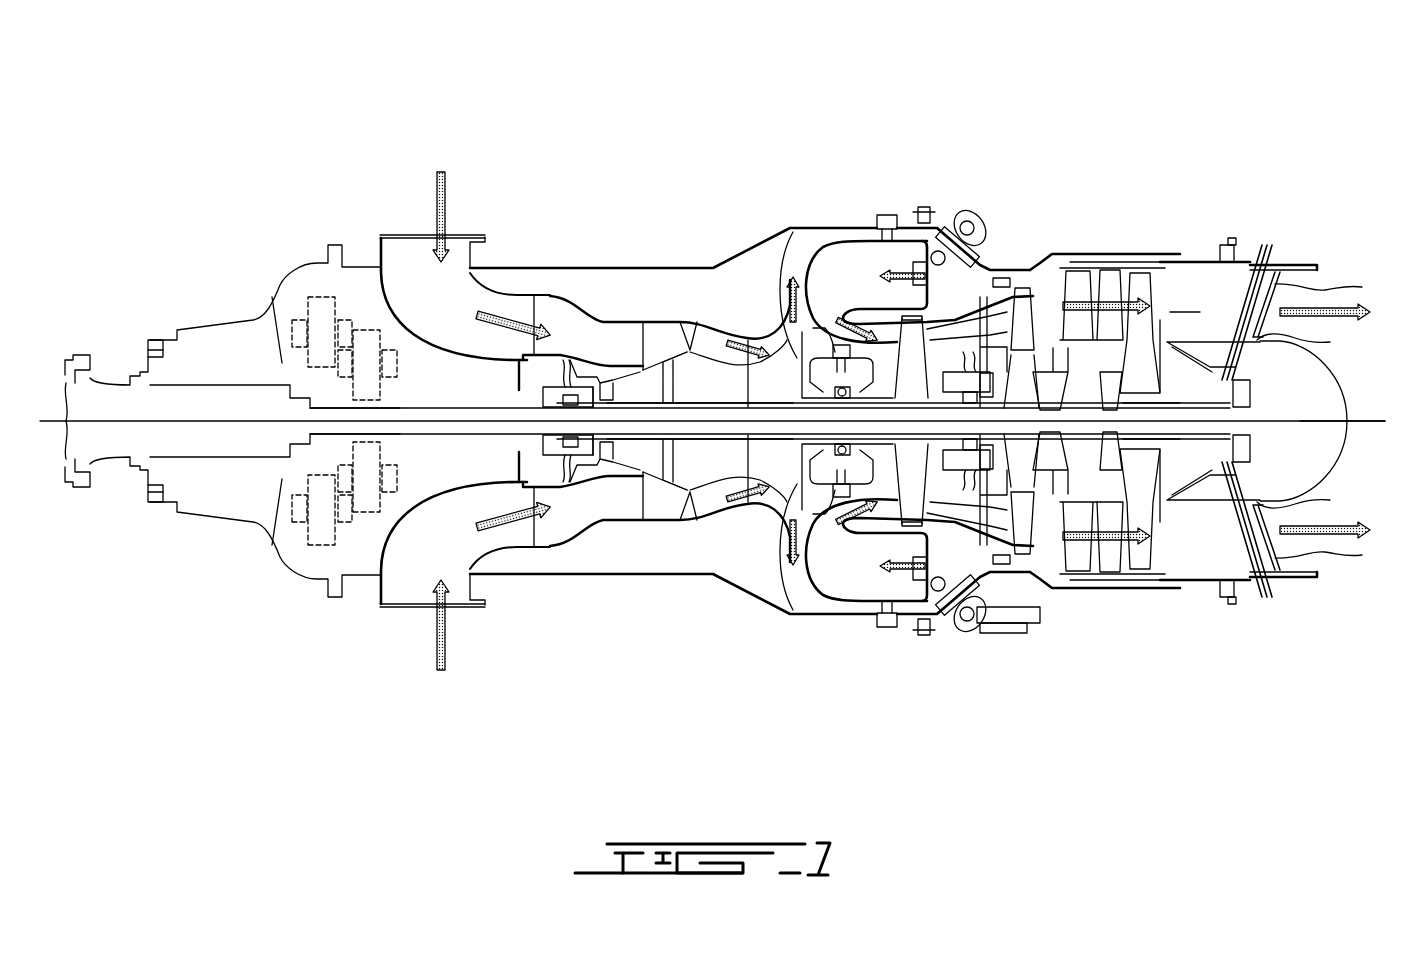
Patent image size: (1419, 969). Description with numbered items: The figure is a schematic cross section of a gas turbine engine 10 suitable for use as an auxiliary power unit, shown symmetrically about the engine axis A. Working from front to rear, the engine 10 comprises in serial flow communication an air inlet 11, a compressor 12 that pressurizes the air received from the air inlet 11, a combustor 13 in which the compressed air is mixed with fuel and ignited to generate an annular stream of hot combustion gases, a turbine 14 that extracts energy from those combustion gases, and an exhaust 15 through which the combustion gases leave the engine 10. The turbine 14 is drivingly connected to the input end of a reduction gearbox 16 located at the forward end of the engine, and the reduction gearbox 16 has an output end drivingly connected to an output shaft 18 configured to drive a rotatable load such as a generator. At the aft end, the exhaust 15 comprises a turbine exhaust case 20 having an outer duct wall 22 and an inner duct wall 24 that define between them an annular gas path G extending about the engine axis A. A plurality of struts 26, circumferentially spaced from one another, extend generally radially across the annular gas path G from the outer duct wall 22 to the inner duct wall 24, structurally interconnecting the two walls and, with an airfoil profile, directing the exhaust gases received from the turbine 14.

The gas turbine engine 10 is at (1016, 136).
The air inlet 11 is at (410, 250).
The compressor 12 is at (625, 535).
The combustor 13 is at (850, 260).
The turbine 14 is at (1096, 211).
The exhaust 15 is at (1256, 225).
The reduction gearbox 16 is at (303, 557).
The output shaft 18 is at (110, 398).
The turbine exhaust case 20 is at (1303, 243).
The outer duct wall 22 is at (1318, 271).
The inner duct wall 24 is at (1333, 342).
The struts 26 is at (1362, 287).
The engine axis A is at (1368, 420).
The annular gas path G is at (1195, 309).